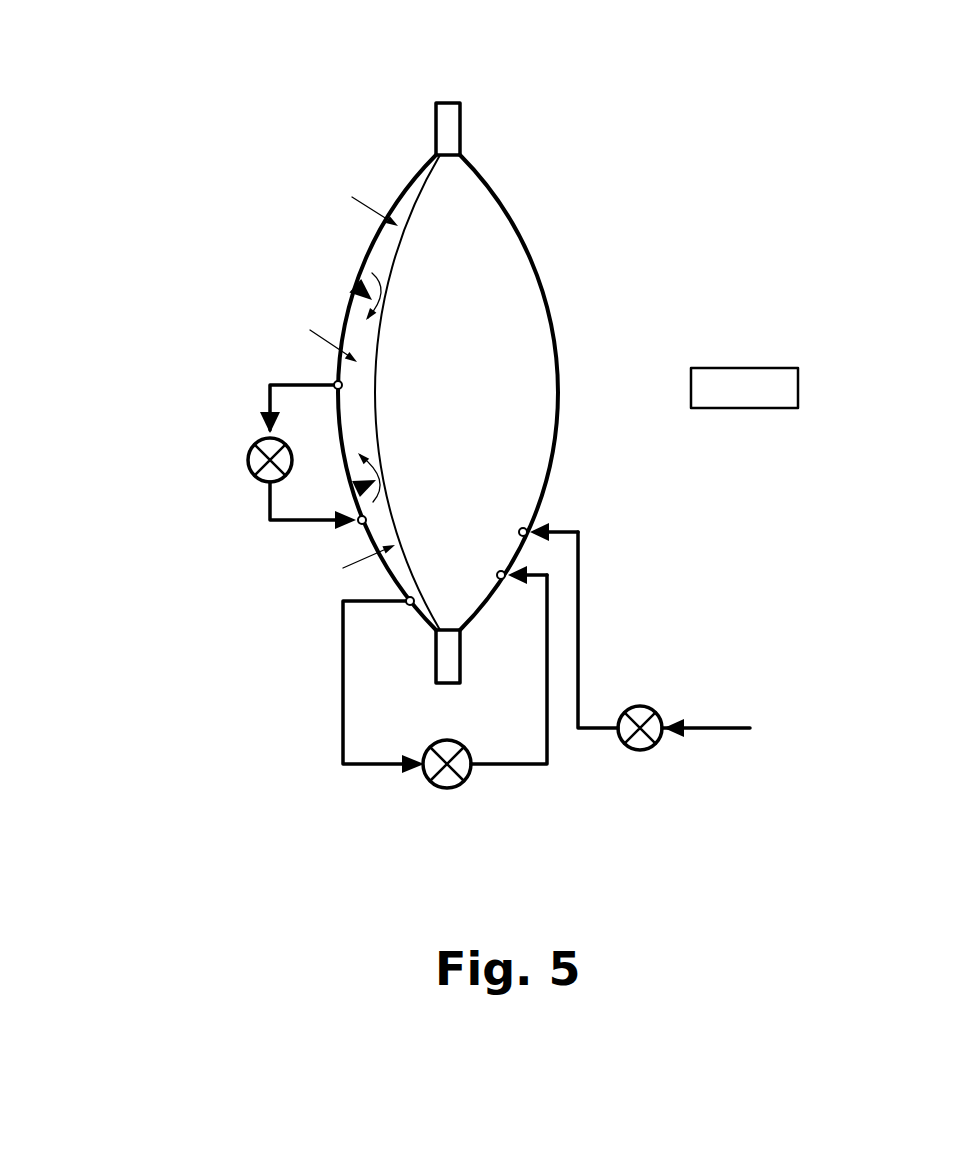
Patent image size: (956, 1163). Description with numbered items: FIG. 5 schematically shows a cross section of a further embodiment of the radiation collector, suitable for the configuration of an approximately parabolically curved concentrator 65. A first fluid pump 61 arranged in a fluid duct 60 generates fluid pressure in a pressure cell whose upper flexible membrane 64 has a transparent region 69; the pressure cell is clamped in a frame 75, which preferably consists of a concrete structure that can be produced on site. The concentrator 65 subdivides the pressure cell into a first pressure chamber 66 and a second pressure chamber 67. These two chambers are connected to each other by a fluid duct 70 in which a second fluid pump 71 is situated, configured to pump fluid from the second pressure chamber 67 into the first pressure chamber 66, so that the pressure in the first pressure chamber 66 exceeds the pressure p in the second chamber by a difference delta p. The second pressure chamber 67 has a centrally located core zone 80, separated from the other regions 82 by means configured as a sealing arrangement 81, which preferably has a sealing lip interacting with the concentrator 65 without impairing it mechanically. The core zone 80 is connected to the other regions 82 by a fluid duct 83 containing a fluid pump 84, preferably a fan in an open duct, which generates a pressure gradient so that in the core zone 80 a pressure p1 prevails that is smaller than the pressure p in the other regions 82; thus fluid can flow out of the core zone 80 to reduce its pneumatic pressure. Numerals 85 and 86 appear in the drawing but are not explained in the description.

The fluid duct 60 is at (580, 592).
The first fluid pump 61 is at (645, 752).
The upper flexible membrane 64 is at (538, 139).
The concentrator 65 is at (348, 98).
The first pressure chamber 66 is at (495, 296).
The second pressure chamber 67 is at (180, 261).
The transparent region 69 is at (548, 312).
The fluid duct 70 is at (343, 723).
The second fluid pump 71 is at (443, 790).
The frame 75 is at (452, 662).
The core zone 80 is at (360, 395).
The sealing arrangement 81 is at (358, 290).
The other regions 82 is at (398, 210).
The fluid duct 83 is at (268, 402).
The fluid pump 84 is at (247, 456).
The membrane surface 85 is at (396, 347).
The membrane 86 is at (402, 493).